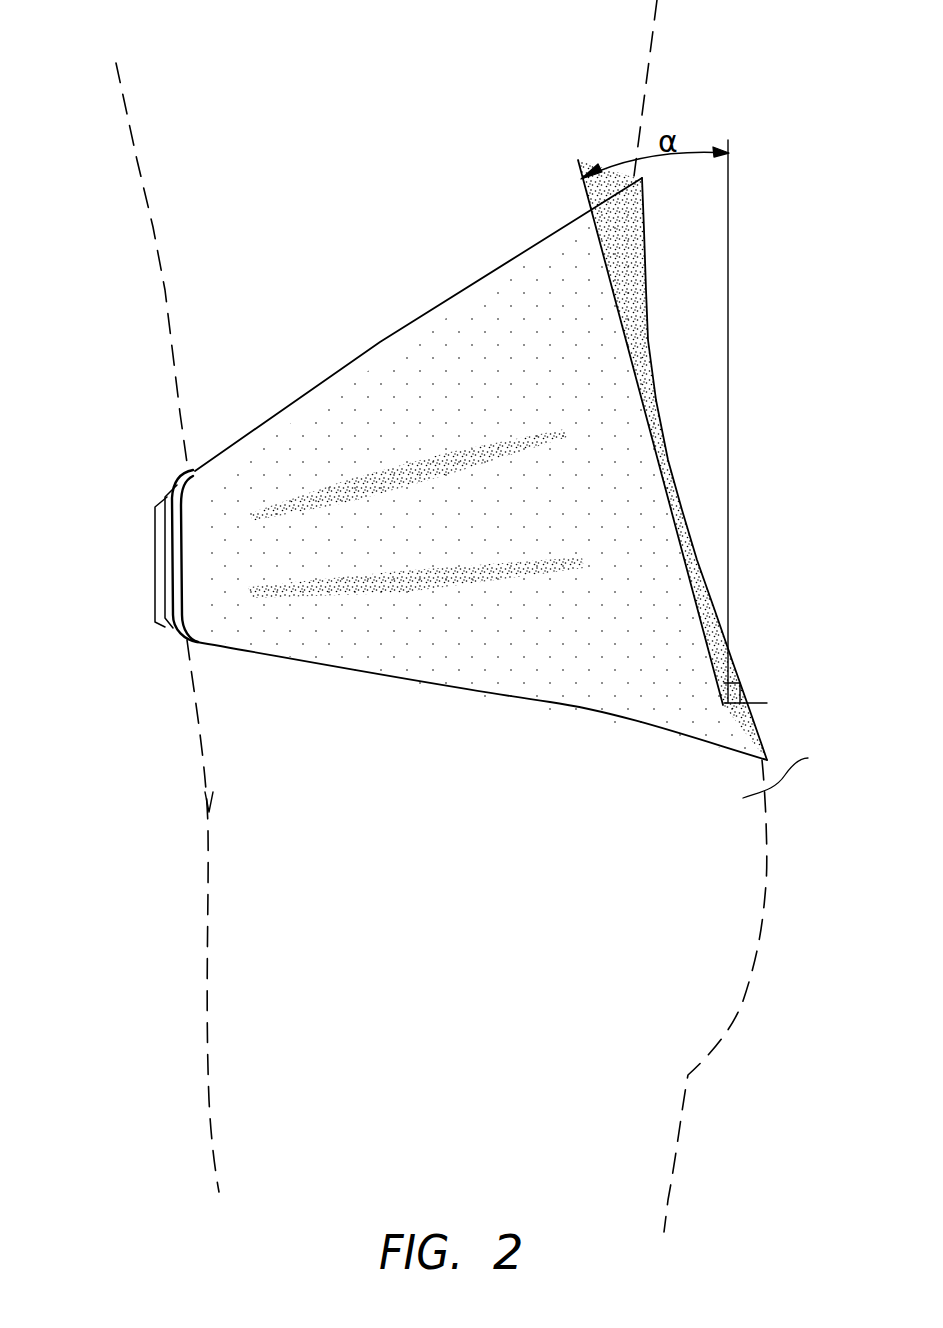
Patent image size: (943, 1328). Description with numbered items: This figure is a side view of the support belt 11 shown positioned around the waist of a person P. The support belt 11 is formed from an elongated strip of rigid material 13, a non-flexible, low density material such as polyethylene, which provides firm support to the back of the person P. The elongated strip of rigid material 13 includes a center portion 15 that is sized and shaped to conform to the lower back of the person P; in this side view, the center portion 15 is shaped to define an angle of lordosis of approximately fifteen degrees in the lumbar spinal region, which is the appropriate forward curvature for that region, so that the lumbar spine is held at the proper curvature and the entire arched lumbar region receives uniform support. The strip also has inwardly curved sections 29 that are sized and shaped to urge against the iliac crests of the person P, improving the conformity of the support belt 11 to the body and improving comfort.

The support belt 11 is at (120, 577).
The elongated strip of rigid material 13 is at (453, 306).
The center portion 15 is at (652, 675).
The inwardly curved sections 29 is at (342, 405).
The person P is at (785, 771).